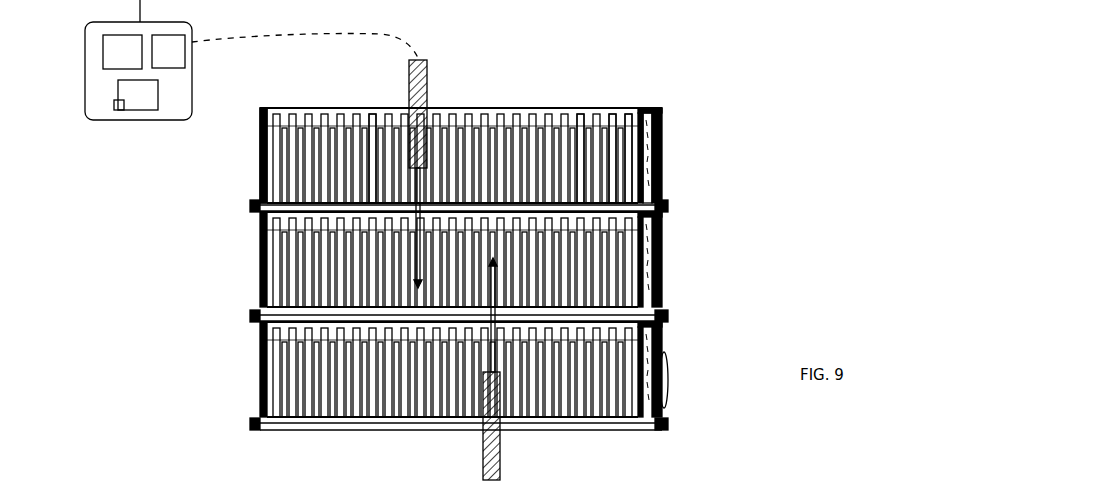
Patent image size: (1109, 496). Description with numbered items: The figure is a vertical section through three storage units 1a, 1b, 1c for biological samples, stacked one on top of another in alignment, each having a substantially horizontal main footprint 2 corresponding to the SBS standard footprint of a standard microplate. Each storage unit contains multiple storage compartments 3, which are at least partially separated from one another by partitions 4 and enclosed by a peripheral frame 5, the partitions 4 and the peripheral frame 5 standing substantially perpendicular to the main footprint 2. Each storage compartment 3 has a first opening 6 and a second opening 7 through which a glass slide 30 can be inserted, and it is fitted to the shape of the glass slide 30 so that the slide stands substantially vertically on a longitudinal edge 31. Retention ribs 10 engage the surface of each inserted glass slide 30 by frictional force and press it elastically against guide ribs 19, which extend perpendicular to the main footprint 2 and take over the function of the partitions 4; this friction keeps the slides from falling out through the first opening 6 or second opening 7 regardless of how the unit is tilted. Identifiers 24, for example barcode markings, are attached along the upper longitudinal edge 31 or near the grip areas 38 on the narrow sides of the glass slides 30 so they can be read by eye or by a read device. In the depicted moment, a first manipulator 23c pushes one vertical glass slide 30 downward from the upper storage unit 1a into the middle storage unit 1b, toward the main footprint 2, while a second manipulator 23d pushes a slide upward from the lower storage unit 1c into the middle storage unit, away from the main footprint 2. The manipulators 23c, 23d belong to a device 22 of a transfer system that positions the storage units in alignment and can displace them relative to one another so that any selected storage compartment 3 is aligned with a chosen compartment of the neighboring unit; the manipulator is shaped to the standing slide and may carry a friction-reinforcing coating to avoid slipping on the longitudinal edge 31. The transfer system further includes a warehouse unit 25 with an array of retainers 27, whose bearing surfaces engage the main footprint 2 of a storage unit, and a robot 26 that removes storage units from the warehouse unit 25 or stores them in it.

The upper storage unit 1a is at (737, 135).
The middle storage unit 1b is at (735, 252).
The lower storage unit 1c is at (728, 411).
The main footprint 2 is at (259, 209).
The storage compartment 3 is at (292, 378).
The partition 4 is at (251, 60).
The peripheral frame 5 is at (262, 147).
The first opening 6 is at (373, 126).
The second opening 7 is at (308, 427).
The rib 10 is at (612, 148).
The guide rib 19 is at (580, 128).
The device 22 is at (168, 51).
The first manipulator 23c is at (423, 81).
The second manipulator 23d is at (499, 452).
The identifier 24 is at (663, 148).
The warehouse unit 25 is at (138, 95).
The robot 26 is at (122, 52).
The retainer 27 is at (119, 108).
The glass slide 30 is at (626, 140).
The longitudinal edge 31 is at (637, 208).
The grip area 38 is at (640, 0).